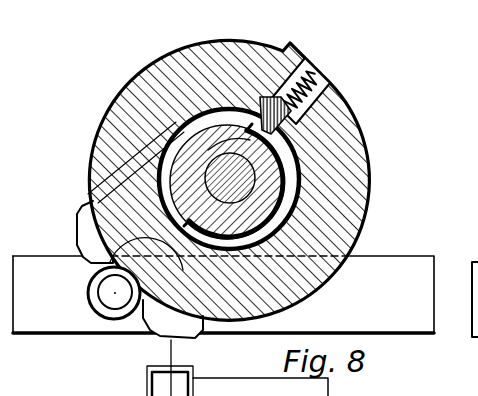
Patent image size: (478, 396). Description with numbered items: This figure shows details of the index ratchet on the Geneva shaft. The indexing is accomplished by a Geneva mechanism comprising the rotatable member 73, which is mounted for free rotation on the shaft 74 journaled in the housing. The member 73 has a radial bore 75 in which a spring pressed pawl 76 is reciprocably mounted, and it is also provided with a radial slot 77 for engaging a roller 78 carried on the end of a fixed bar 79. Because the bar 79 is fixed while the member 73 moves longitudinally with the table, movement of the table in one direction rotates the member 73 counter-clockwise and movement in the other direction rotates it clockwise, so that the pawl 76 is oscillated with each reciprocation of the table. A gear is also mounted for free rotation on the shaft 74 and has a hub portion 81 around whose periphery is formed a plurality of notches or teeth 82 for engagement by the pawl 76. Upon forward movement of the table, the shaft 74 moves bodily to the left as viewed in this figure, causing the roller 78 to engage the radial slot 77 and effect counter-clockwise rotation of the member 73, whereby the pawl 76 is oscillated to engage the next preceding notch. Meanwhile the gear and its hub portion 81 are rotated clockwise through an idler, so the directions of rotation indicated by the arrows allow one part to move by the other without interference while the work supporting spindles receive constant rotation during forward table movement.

The rotatable member 73 is at (357, 143).
The shaft 74 is at (247, 186).
The radial bore 75 is at (305, 113).
The spring pressed pawl 76 is at (257, 100).
The radial slot 77 is at (108, 258).
The roller 78 is at (108, 322).
The fixed bar 79 is at (380, 264).
The hub portion 81 is at (173, 118).
The notches or teeth 82 is at (272, 224).